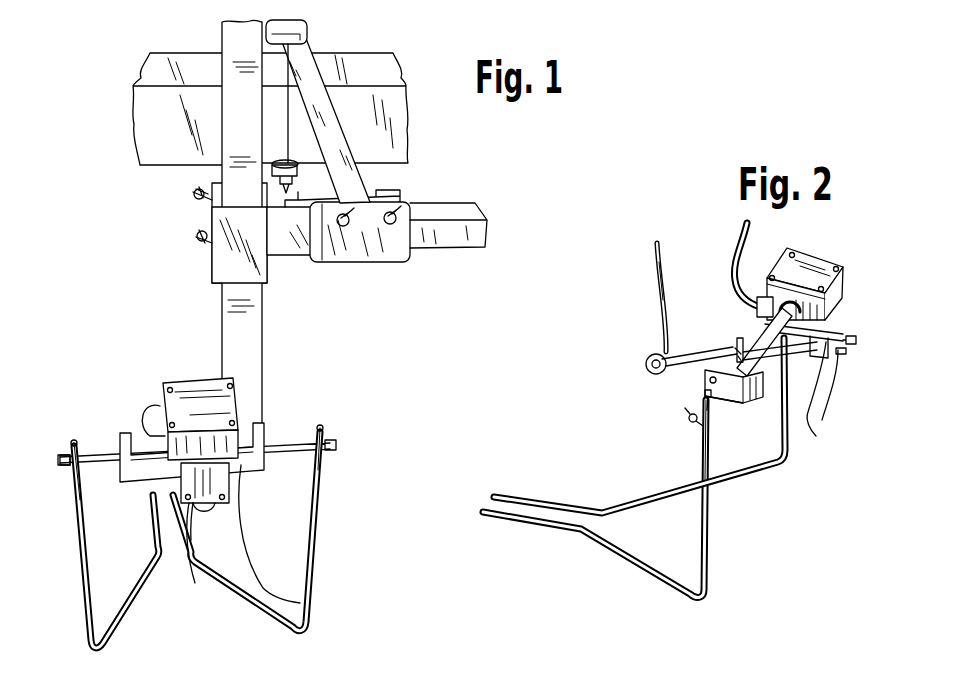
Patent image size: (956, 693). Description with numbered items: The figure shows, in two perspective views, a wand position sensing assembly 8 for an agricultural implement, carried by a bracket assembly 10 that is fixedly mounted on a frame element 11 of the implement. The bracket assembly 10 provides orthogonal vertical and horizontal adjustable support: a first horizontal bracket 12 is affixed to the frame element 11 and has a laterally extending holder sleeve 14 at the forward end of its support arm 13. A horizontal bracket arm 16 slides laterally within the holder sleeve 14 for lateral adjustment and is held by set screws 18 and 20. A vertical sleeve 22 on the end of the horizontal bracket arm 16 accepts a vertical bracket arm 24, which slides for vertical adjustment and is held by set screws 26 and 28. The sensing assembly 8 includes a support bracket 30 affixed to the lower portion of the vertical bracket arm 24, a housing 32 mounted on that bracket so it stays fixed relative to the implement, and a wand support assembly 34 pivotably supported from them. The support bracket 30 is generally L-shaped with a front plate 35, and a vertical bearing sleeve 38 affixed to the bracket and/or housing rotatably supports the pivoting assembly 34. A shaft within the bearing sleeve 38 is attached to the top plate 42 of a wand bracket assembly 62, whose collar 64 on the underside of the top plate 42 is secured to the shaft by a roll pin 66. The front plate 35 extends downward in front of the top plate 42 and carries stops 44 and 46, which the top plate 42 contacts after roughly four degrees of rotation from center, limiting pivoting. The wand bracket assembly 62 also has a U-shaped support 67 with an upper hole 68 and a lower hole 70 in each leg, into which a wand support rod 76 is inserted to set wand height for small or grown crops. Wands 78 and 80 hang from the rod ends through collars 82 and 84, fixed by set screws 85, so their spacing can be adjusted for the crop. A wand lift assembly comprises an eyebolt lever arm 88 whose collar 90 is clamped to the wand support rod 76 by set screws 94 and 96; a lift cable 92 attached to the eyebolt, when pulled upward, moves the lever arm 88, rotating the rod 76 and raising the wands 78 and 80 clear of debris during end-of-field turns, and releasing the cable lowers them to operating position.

In FIG. 1, the wand position sensing assembly 8 is at (206, 493).
In FIG. 1, the bracket assembly 10 is at (272, 235).
In FIG. 1, the frame element 11 is at (147, 107).
In FIG. 1, the first horizontal bracket 12 is at (348, 120).
In FIG. 1, the support arm 13 is at (312, 82).
In FIG. 1, the holder sleeve 14 is at (388, 200).
In FIG. 1, the horizontal bracket arm 16 is at (437, 237).
In FIG. 1, the set screw 18 is at (390, 262).
In FIG. 1, the set screw 20 is at (350, 264).
In FIG. 1, the vertical sleeve 22 is at (215, 220).
In FIG. 1, the vertical bracket arm 24 is at (238, 45).
In FIG. 1, the set screw 26 is at (193, 197).
In FIG. 1, the set screw 28 is at (203, 242).
In FIG. 1, the support bracket 30 is at (300, 603).
In FIG. 1, the housing 32 is at (197, 387).
In FIG. 2, the housing 32 is at (800, 303).
In FIG. 1, the wand support assembly 34 is at (276, 425).
In FIG. 2, the wand support assembly 34 is at (701, 333).
In FIG. 1, the front plate 35 is at (207, 513).
In FIG. 2, the front plate 35 is at (850, 313).
In FIG. 2, the vertical bearing sleeve 38 is at (841, 352).
In FIG. 2, the top plate 42 is at (742, 268).
In FIG. 1, the stop 44 is at (195, 583).
In FIG. 1, the stop 46 is at (191, 540).
In FIG. 1, the wand bracket assembly 62 is at (265, 462).
In FIG. 2, the wand bracket assembly 62 is at (767, 372).
In FIG. 2, the collar 64 is at (823, 382).
In FIG. 2, the roll pin 66 is at (808, 408).
In FIG. 2, the U-shaped support 67 is at (743, 405).
In FIG. 2, the upper hole 68 is at (709, 380).
In FIG. 2, the lower hole 70 is at (705, 393).
In FIG. 1, the wand support rod 76 is at (100, 452).
In FIG. 2, the wand support rod 76 is at (745, 345).
In FIG. 1, the wand 78 is at (313, 558).
In FIG. 2, the wand 78 is at (730, 485).
In FIG. 1, the wand 80 is at (80, 560).
In FIG. 2, the wand 80 is at (630, 563).
In FIG. 1, the collar 82 is at (327, 430).
In FIG. 1, the collar 84 is at (70, 452).
In FIG. 2, the collar 84 is at (692, 428).
In FIG. 2, the set screw 85 is at (689, 420).
In FIG. 2, the eyebolt lever arm 88 is at (647, 366).
In FIG. 2, the collar 90 is at (738, 352).
In FIG. 2, the lift cable 92 is at (656, 258).
In FIG. 2, the set screw 94 is at (740, 358).
In FIG. 2, the set screw 96 is at (740, 340).